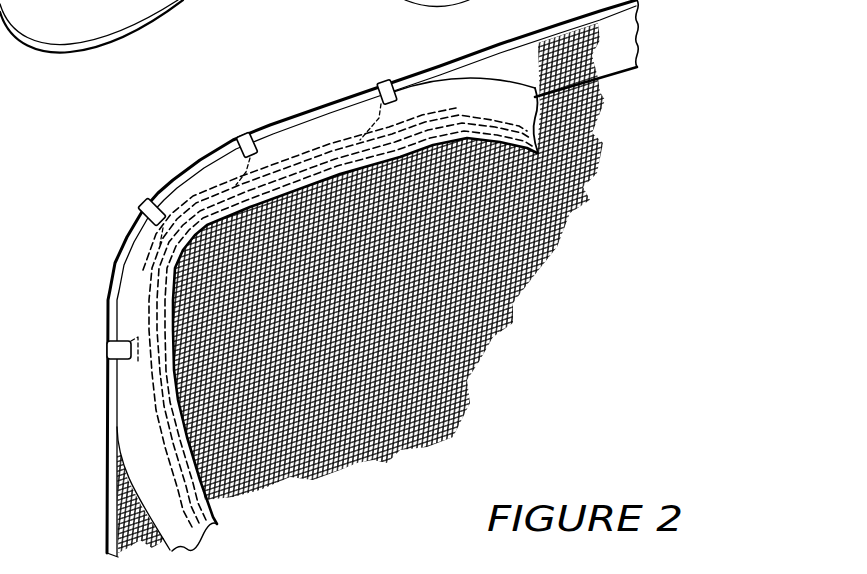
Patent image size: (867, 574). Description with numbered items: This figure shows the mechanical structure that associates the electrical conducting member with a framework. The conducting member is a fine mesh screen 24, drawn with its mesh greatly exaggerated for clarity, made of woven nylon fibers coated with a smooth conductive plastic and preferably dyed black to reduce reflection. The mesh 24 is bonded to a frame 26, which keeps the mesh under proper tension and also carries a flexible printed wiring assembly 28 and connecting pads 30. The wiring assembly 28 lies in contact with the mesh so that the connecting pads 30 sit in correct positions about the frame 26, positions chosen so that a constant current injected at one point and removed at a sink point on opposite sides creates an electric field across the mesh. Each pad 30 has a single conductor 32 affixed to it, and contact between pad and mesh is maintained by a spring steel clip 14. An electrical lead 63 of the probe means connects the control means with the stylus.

The spring steel clip 14 is at (383, 82).
The fine mesh screen 24 is at (493, 295).
The frame 26 is at (623, 43).
The wiring assembly 28 is at (507, 93).
The connecting pads 30 is at (412, 68).
The conductor 32 is at (143, 423).
The electrical lead 63 is at (181, 0).